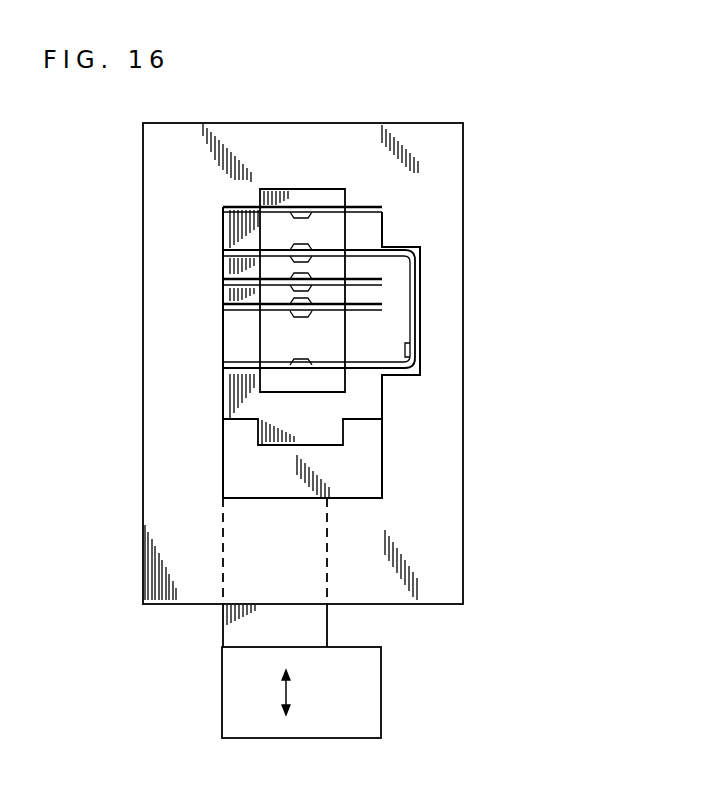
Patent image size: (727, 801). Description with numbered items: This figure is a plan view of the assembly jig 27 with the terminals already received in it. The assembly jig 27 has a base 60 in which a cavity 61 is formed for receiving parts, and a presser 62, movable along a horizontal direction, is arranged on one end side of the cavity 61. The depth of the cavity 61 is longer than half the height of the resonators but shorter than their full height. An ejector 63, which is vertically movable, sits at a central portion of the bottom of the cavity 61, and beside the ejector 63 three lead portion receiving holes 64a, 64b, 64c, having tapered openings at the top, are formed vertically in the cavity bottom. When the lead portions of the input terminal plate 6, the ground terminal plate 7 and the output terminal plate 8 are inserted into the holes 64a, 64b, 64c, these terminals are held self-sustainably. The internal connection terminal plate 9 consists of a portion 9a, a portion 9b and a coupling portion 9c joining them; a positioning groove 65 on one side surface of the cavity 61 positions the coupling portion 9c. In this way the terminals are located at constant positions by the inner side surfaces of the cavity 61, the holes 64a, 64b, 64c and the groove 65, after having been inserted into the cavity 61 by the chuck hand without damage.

The assembly jig 27 is at (552, 159).
The base 60 is at (450, 228).
The cavity 61 is at (232, 206).
The input terminal plate 6 is at (283, 205).
The lead portion receiving hole 64a is at (360, 220).
The lead portion receiving hole 64b is at (373, 290).
The lead portion receiving hole 64c is at (232, 297).
The ground terminal plate 7 is at (230, 277).
The output terminal plate 8 is at (262, 309).
The internal connection terminal plate 9 is at (345, 318).
The portion 9a is at (238, 248).
The portion 9b is at (239, 372).
The coupling portion 9c is at (415, 320).
The ejector 63 is at (268, 337).
The positioning groove 65 is at (411, 355).
The presser 62 is at (223, 630).